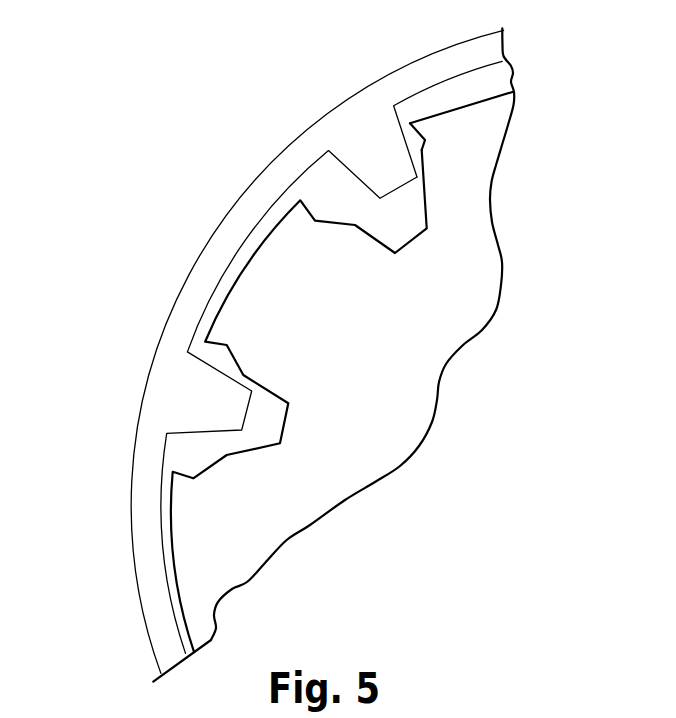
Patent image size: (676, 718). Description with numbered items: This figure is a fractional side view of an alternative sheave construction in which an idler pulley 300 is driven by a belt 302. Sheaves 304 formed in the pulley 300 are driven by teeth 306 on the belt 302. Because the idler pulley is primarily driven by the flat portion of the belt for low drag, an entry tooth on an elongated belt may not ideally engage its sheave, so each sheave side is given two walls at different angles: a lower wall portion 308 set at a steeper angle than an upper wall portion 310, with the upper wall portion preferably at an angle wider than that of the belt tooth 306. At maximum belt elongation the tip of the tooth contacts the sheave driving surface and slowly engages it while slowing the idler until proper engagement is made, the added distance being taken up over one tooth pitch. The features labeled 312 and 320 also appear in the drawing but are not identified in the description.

The segment body 300 is at (413, 352).
The outer housing wall 302 is at (210, 272).
The inner layer 304 is at (412, 233).
The intermediate layer with teeth 306 is at (373, 152).
The upper segment portion 308 is at (426, 202).
The notch 310 is at (422, 150).
The slot 312 is at (397, 127).
The segment 320 is at (584, 709).